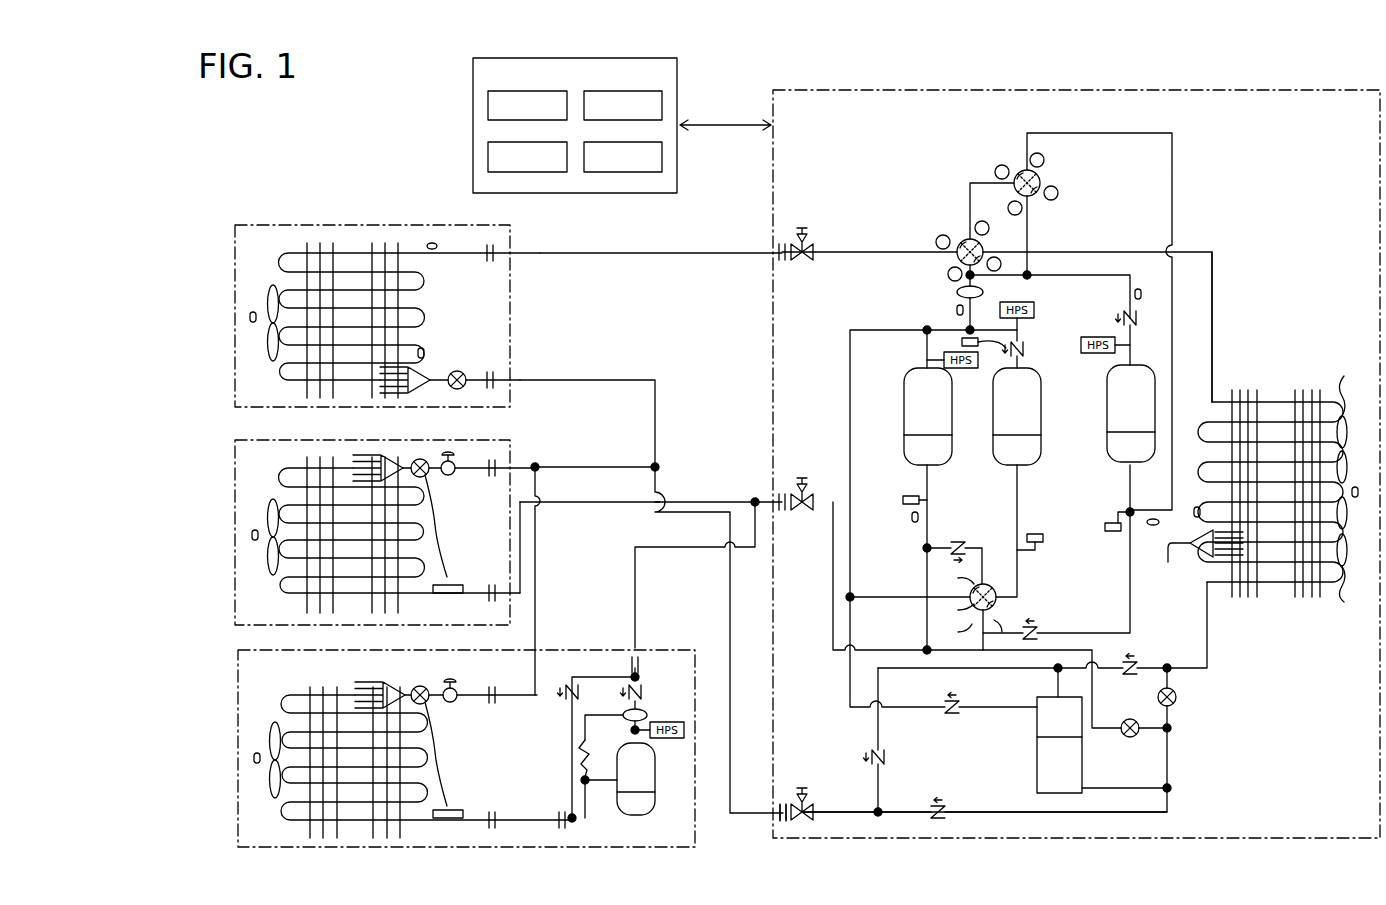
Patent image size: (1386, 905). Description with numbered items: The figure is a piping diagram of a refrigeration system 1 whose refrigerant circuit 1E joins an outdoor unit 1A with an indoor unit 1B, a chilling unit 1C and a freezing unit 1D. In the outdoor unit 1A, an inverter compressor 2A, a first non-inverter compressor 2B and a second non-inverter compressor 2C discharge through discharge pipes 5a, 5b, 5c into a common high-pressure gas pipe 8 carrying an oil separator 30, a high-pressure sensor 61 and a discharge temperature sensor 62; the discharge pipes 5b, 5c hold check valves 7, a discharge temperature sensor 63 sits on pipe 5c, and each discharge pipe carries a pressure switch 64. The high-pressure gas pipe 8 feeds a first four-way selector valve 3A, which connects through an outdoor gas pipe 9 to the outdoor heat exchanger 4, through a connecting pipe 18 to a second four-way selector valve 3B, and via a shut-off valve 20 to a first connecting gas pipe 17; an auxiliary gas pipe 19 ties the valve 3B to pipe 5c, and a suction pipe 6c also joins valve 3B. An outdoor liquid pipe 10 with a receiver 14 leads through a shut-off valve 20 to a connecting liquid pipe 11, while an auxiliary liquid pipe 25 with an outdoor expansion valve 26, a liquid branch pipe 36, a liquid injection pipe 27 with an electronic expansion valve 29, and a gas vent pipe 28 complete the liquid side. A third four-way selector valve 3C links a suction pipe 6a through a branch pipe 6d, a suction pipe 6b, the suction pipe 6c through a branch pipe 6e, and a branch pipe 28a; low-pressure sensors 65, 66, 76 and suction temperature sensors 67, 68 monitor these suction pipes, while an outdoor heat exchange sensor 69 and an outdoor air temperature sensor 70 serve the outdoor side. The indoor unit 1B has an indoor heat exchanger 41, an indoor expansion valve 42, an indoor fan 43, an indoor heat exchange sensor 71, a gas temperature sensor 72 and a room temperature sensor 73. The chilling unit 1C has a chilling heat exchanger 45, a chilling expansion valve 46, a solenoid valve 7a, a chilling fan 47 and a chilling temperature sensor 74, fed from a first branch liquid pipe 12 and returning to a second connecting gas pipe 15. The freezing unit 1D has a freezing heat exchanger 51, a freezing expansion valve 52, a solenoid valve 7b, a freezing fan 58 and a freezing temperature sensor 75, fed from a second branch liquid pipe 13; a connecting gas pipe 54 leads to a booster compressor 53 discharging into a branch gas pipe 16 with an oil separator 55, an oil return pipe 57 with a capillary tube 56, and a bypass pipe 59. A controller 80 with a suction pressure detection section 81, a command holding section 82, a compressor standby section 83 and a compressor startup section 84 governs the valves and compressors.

The refrigeration system 1 is at (297, 177).
The outdoor unit 1A is at (773, 393).
The indoor unit 1B is at (235, 374).
The chilling unit 1C is at (235, 476).
The freezing unit 1D is at (237, 685).
The refrigerant circuit 1E is at (1237, 227).
The inverter compressor 2A is at (906, 440).
The first non-inverter compressor 2B is at (1041, 430).
The second non-inverter compressor 2C is at (1107, 456).
The first four-way selector valve 3A is at (964, 242).
The second four-way selector valve 3B is at (1068, 173).
The third four-way selector valve 3C is at (986, 587).
The outdoor heat exchanger 4 is at (1267, 596).
The discharge pipe 5a is at (924, 360).
The discharge pipe 5b is at (1018, 330).
The discharge pipe 5c is at (1056, 278).
The suction pipe 6a is at (924, 474).
The suction pipe 6b is at (1017, 490).
The suction pipe 6c is at (1172, 160).
The branch pipe 6d is at (934, 538).
The branch pipe 6e is at (1130, 633).
The check valve 7 is at (1138, 322).
The solenoid valve 7a is at (450, 475).
The solenoid valve 7b is at (452, 702).
The high-pressure gas pipe 8 is at (978, 310).
The outdoor gas pipe 9 is at (1212, 258).
The outdoor liquid pipe 10 is at (1207, 648).
The connecting liquid pipe 11 is at (730, 667).
The first branch liquid pipe 12 is at (586, 466).
The second branch liquid pipe 13 is at (539, 508).
The receiver 14 is at (1037, 750).
The second connecting gas pipe 15 is at (724, 498).
The branch gas pipe 16 is at (638, 565).
The first connecting gas pipe 17 is at (614, 253).
The connecting pipe 18 is at (983, 185).
The auxiliary gas pipe 19 is at (1068, 230).
The shut-off valve 20 is at (802, 244).
The auxiliary liquid pipe 25 is at (1167, 768).
The outdoor expansion valve 26 is at (1176, 697).
The liquid injection pipe 27 is at (1170, 732).
The gas vent pipe 28 is at (850, 328).
The branch pipe 28a is at (880, 598).
The electronic expansion valve 29 is at (1130, 737).
The oil separator 30 is at (953, 290).
The liquid branch pipe 36 is at (878, 730).
The indoor heat exchanger 41 is at (415, 272).
The indoor expansion valve 42 is at (457, 371).
The indoor fan 43 is at (264, 292).
The chilling heat exchanger 45 is at (334, 468).
The chilling expansion valve 46 is at (424, 466).
The chilling fan 47 is at (264, 507).
The freezing heat exchanger 51 is at (349, 690).
The freezing expansion valve 52 is at (421, 688).
The booster compressor 53 is at (639, 813).
The connecting gas pipe 54 is at (509, 818).
The oil separator 55 is at (640, 718).
The capillary tube 56 is at (580, 754).
The oil return pipe 57 is at (586, 715).
The freezing fan 58 is at (264, 734).
The bypass pipe 59 is at (593, 676).
The high-pressure sensor 61 is at (1013, 352).
The discharge temperature sensor 62 is at (955, 312).
The discharge temperature sensor 63 is at (1142, 294).
The pressure switch 64 is at (1032, 304).
The low-pressure sensor 65 is at (904, 499).
The low-pressure sensor 66 is at (1104, 526).
The suction temperature sensor 67 is at (912, 516).
The suction temperature sensor 68 is at (1153, 525).
The outdoor heat exchange sensor 69 is at (1196, 506).
The outdoor air temperature sensor 70 is at (1353, 488).
The indoor heat exchange sensor 71 is at (421, 348).
The gas temperature sensor 72 is at (430, 243).
The room temperature sensor 73 is at (250, 318).
The chilling temperature sensor 74 is at (250, 533).
The freezing temperature sensor 75 is at (250, 760).
The low-pressure sensor 76 is at (1040, 547).
The controller 80 is at (473, 58).
The suction pressure detection section 81 is at (488, 106).
The command holding section 82 is at (662, 102).
The compressor standby section 83 is at (488, 155).
The compressor startup section 84 is at (662, 158).